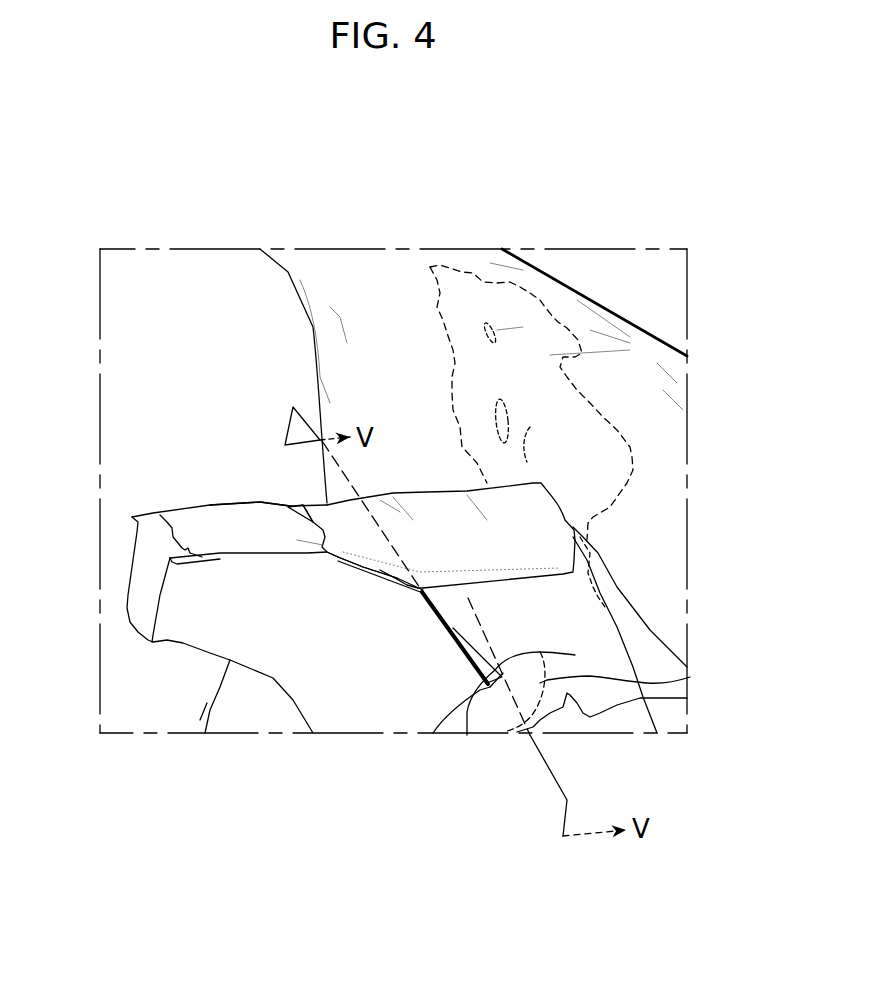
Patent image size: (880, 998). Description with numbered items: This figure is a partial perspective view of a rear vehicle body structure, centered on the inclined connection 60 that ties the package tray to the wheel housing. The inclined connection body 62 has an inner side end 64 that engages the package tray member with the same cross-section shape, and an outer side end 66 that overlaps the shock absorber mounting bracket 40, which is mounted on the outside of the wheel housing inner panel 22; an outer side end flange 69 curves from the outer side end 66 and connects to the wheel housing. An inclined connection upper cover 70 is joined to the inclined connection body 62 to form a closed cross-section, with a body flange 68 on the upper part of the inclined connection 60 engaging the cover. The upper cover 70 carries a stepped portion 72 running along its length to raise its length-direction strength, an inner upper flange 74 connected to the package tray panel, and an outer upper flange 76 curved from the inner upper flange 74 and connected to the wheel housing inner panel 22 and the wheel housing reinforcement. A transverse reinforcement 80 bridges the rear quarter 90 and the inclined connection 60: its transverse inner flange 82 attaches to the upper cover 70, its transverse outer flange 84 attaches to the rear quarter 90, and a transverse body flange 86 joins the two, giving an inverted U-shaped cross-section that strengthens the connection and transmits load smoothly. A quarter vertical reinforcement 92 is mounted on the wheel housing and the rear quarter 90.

The wheel housing inner panel 22 is at (598, 690).
The shock absorber mounting bracket 40 is at (690, 677).
The inclined connection 60 is at (188, 652).
The inclined connection body 62 is at (297, 645).
The inner side end 64 is at (150, 642).
The outer side end 66 is at (444, 721).
The body flange 68 is at (148, 513).
The outer side end flange 69 is at (457, 713).
The inclined connection upper cover 70 is at (202, 500).
The stepped portion 72 is at (248, 527).
The inner upper flange 74 is at (183, 517).
The outer upper flange 76 is at (575, 655).
The transverse reinforcement 80 is at (428, 490).
The transverse inner flange 82 is at (340, 549).
The transverse outer flange 84 is at (573, 547).
The transverse body flange 86 is at (488, 578).
The rear quarter 90 is at (627, 302).
The quarter vertical reinforcement 92 is at (558, 322).